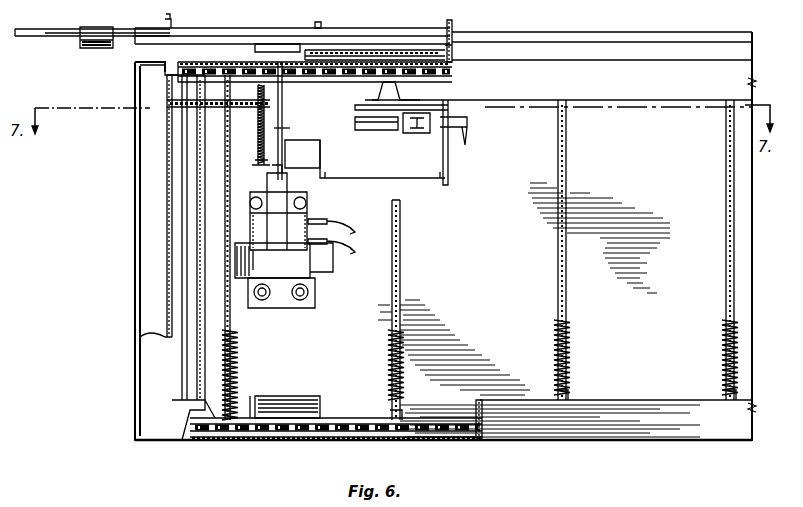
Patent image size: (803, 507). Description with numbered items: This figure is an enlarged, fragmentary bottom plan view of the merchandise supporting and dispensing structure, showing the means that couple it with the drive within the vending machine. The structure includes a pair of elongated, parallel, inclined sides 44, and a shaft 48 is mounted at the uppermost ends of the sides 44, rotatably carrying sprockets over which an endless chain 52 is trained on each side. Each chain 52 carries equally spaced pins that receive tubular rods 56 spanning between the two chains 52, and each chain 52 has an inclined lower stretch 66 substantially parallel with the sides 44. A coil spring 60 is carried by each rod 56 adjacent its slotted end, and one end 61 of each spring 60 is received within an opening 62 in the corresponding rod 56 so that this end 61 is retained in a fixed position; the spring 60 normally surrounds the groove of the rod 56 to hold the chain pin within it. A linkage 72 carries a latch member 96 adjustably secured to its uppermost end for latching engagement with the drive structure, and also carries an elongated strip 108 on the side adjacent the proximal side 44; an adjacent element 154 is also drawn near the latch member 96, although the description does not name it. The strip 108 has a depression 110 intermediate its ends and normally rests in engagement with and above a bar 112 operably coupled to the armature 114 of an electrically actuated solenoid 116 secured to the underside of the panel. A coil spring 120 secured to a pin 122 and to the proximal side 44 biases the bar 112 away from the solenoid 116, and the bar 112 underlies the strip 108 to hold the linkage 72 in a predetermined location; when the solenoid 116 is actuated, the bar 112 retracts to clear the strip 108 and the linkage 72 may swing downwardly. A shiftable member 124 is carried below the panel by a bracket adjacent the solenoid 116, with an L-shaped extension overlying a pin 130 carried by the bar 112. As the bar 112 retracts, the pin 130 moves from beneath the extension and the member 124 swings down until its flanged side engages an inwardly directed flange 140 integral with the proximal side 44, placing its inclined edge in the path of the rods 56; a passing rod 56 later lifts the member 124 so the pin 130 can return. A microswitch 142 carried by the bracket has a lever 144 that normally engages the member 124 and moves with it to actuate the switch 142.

The side 44 is at (200, 38).
The shaft 48 is at (199, 272).
The chain 52 is at (385, 92).
The tubular rod 56 is at (228, 200).
The coil spring 60 is at (240, 358).
The end of spring 61 is at (236, 322).
The opening 62 is at (284, 287).
The lower stretch 66 is at (470, 440).
The linkage 72 is at (548, 32).
The latch member 96 is at (54, 33).
The elongated strip 108 is at (387, 36).
The depression 110 is at (349, 18).
The bar 112 is at (282, 18).
The armature 114 is at (290, 180).
The solenoid 116 is at (305, 222).
The coil spring 120 is at (258, 150).
The pin 122 is at (302, 154).
The shiftable member 124 is at (384, 142).
The pin 130 is at (287, 128).
The flange 140 is at (636, 100).
The microswitch 142 is at (440, 140).
The lever 144 is at (398, 126).
The stop block 154 is at (97, 48).